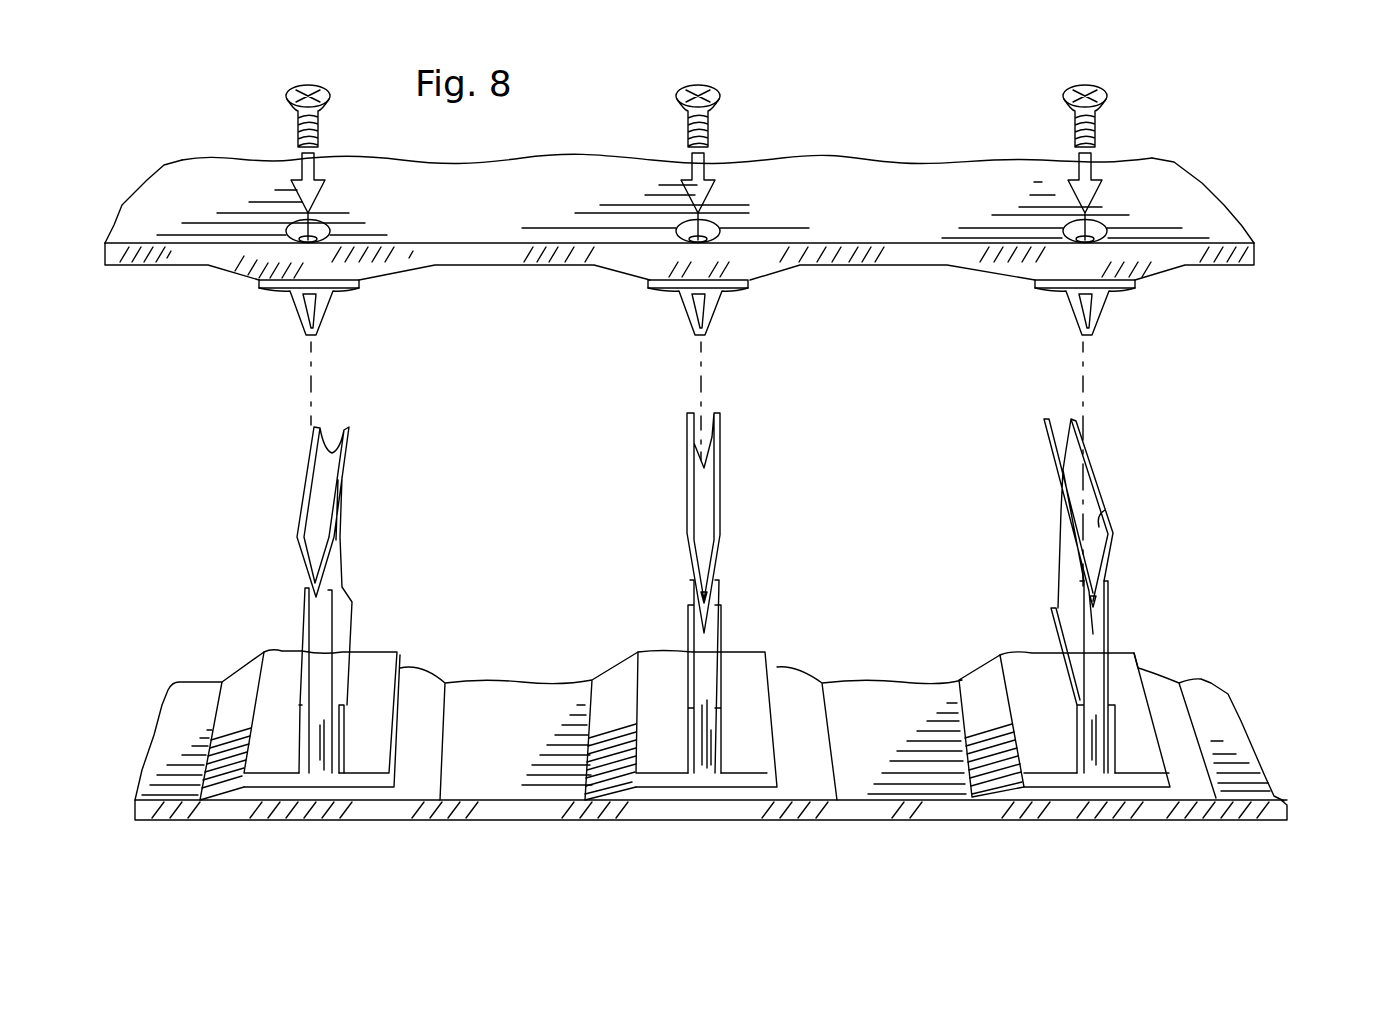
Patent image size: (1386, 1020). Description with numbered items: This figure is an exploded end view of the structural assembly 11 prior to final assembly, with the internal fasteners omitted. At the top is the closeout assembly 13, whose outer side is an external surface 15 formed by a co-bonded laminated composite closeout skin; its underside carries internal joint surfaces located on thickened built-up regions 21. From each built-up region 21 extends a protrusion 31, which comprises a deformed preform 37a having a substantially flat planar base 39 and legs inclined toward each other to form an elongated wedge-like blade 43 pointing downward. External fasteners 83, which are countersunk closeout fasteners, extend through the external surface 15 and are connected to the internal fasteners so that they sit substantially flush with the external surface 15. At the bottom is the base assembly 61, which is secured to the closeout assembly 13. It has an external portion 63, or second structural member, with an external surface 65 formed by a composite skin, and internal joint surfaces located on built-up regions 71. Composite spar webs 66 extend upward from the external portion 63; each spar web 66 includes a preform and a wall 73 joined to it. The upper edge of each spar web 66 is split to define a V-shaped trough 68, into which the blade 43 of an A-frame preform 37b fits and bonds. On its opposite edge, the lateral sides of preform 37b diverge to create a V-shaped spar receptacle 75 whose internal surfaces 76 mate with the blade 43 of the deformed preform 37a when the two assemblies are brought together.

The structural assembly 11 is at (975, 112).
The closeout assembly 13 is at (1267, 85).
The external surface 15 is at (853, 213).
The built-up region 21 is at (1013, 270).
The protrusion 31 is at (1105, 295).
The deformed preform 37a is at (727, 290).
The A-frame preform 37b is at (717, 543).
The planar base 39 is at (653, 287).
The wedge-like blade 43 is at (692, 312).
The base assembly 61 is at (1307, 480).
The external portion 63 is at (887, 727).
The external surface 65 is at (945, 822).
The spar web 66 is at (722, 587).
The V-shaped trough 68 is at (693, 607).
The built-up region 71 is at (1147, 678).
The wall 73 is at (1097, 645).
The V-shaped spar receptacle 75 is at (1110, 557).
The internal surfaces 76 is at (1103, 510).
The external fasteners 83 is at (720, 98).